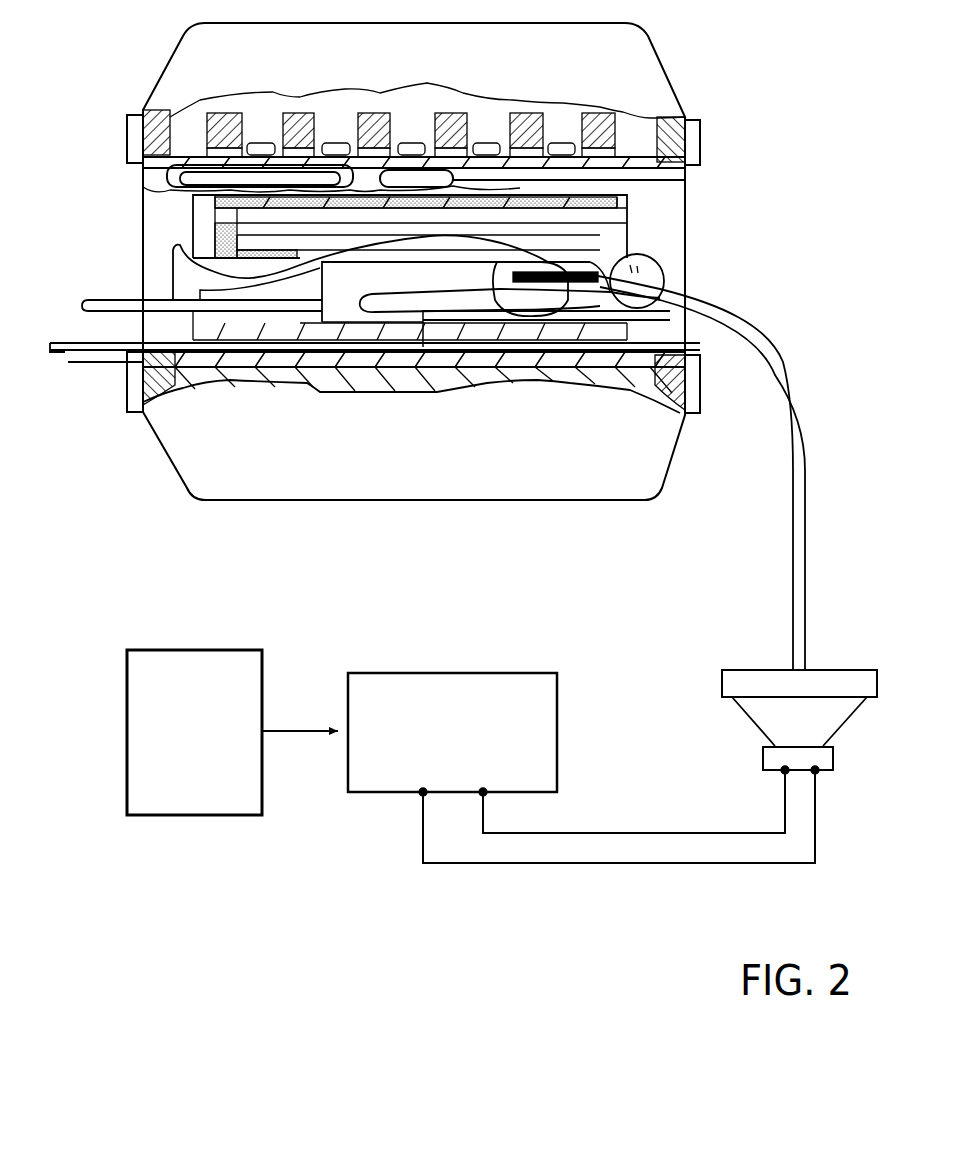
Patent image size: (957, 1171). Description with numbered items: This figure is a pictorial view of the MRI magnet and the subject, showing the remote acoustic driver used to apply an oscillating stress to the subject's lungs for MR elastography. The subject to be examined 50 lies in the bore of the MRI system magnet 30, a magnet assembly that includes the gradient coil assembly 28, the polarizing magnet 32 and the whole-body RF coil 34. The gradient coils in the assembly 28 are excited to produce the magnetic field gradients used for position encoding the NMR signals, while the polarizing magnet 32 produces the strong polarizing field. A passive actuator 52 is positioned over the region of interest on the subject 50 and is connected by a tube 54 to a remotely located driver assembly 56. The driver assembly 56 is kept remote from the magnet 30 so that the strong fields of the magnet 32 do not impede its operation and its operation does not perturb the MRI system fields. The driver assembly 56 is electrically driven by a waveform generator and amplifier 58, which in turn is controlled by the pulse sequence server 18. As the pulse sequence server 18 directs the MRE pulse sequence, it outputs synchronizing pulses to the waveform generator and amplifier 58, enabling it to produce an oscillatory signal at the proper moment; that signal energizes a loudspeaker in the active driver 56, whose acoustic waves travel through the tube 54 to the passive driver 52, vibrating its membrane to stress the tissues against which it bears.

The pulse sequence server 18 is at (192, 815).
The gradient coil assembly 28 is at (150, 167).
The magnet assembly 30 is at (166, 50).
The polarizing magnet 32 is at (604, 112).
The whole-body RF coil 34 is at (600, 222).
The subject to be examined 50 is at (647, 257).
The passive actuator 52 is at (497, 262).
The tube 54 is at (807, 430).
The driver assembly 56 is at (690, 679).
The waveform generator and amplifier 58 is at (452, 673).